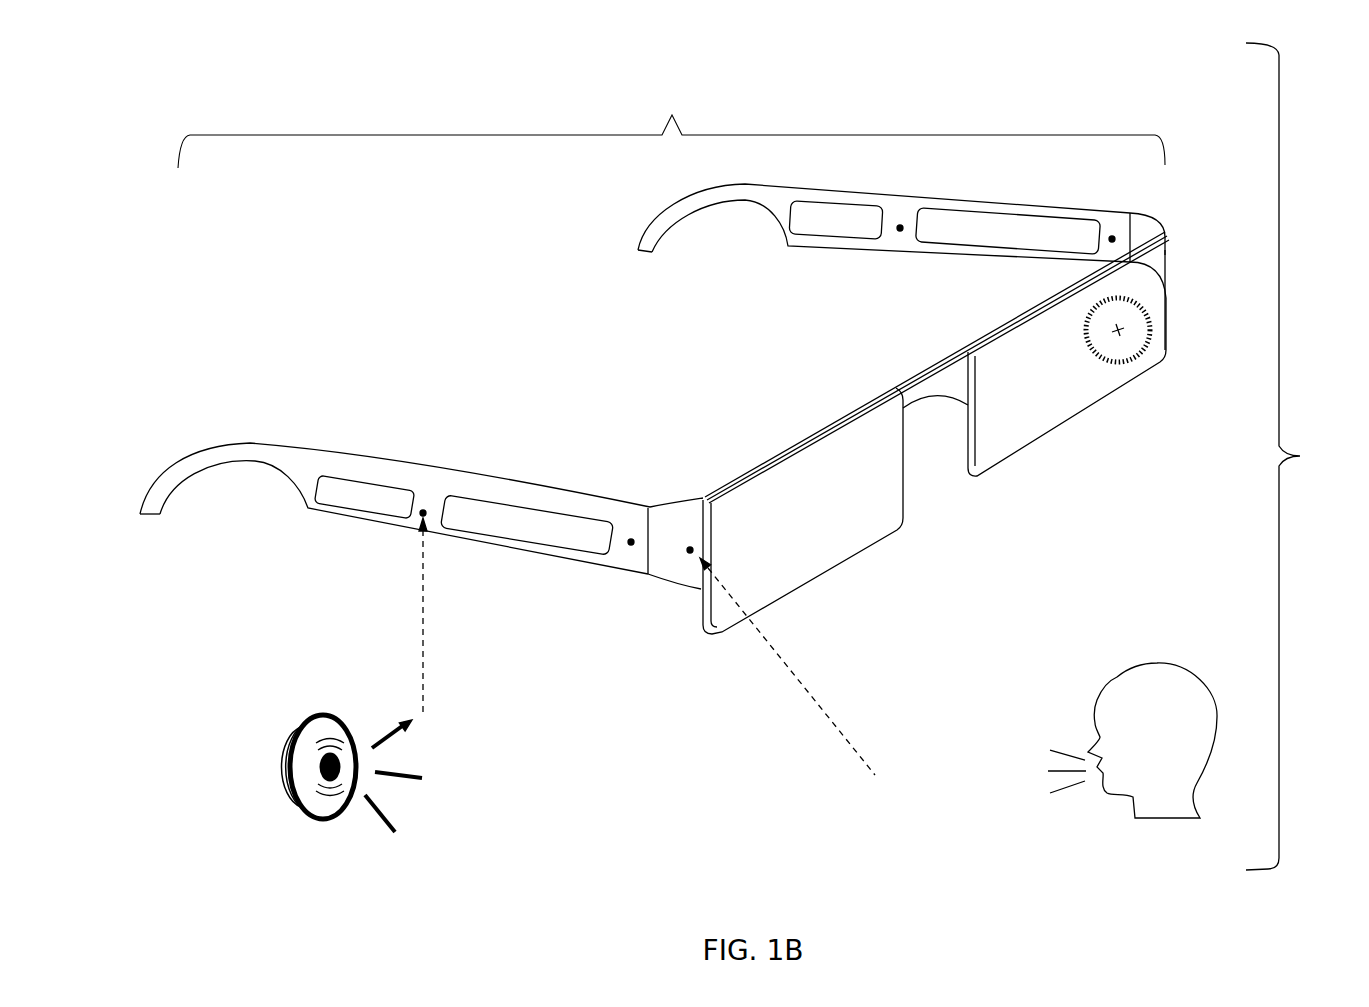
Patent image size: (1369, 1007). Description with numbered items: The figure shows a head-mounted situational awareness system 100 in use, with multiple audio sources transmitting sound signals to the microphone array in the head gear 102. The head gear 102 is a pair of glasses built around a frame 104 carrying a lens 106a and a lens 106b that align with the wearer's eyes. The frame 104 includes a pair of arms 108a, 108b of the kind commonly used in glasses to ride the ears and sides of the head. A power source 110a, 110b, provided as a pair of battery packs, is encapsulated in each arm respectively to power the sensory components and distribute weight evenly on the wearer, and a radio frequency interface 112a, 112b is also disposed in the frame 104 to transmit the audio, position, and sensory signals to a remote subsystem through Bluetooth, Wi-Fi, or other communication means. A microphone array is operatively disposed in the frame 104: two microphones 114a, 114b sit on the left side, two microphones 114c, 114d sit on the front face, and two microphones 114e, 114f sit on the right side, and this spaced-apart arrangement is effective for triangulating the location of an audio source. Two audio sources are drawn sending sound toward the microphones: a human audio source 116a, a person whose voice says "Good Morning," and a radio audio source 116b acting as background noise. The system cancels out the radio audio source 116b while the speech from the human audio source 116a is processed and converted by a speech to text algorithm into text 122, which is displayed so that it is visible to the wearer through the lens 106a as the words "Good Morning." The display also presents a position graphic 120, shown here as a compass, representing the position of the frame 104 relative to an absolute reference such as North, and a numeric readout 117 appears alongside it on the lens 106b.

The head-mounted situational awareness system 100 is at (1299, 456).
The head gear 102 is at (671, 333).
The frame 104 is at (925, 392).
The lens 106a is at (838, 523).
The lens 106b is at (1078, 388).
The arm 108a is at (278, 470).
The arm 108b is at (767, 201).
The power source 110a is at (365, 495).
The power source 110b is at (835, 218).
The radio frequency interface 112a is at (505, 520).
The radio frequency interface 112b is at (1010, 230).
The microphone array 114a is at (418, 520).
The microphone array 114b is at (625, 548).
The microphone array 114c is at (698, 556).
The microphone array 114d is at (905, 220).
The microphone array 114e is at (1130, 218).
The microphone array 114f is at (1168, 240).
The human audio source 116a is at (1133, 800).
The radio audio source 116b is at (283, 752).
The displayed heading indicator 117 is at (1015, 372).
The position graphic 120 is at (1150, 340).
The text 122 is at (862, 467).